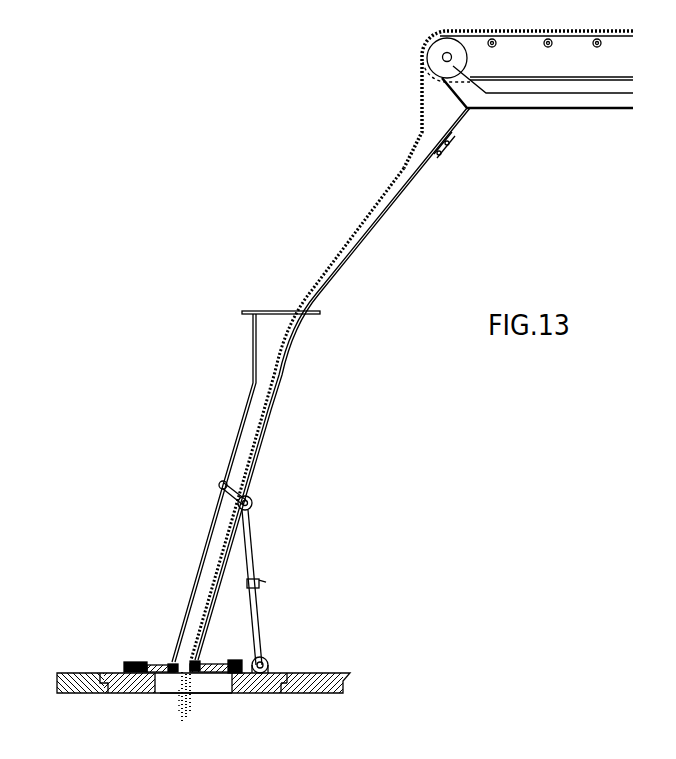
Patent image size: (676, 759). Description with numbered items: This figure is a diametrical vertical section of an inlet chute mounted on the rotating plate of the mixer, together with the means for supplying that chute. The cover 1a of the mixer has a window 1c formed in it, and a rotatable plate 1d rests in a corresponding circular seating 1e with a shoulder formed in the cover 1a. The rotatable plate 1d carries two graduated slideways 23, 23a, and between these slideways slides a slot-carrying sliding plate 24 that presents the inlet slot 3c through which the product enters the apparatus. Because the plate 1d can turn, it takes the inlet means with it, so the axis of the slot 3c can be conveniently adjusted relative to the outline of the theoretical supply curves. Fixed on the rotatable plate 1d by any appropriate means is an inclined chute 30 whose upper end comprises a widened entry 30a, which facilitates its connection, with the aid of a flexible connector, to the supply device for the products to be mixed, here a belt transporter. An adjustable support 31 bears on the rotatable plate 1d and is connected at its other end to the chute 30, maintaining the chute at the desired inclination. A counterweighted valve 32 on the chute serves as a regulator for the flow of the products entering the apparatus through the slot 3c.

The cover 1a is at (348, 683).
The window 1c is at (288, 673).
The rotatable plate 1d is at (250, 694).
The circular seating 1e is at (283, 690).
The slot 3c is at (212, 688).
The graduated slideway 23 is at (135, 661).
The graduated slideway 23a is at (237, 662).
The sliding plate 24 is at (218, 663).
The inclined chute 30 is at (258, 455).
The widened entry 30a is at (253, 311).
The adjustable support 31 is at (254, 532).
The counterweighted valve 32 is at (222, 480).